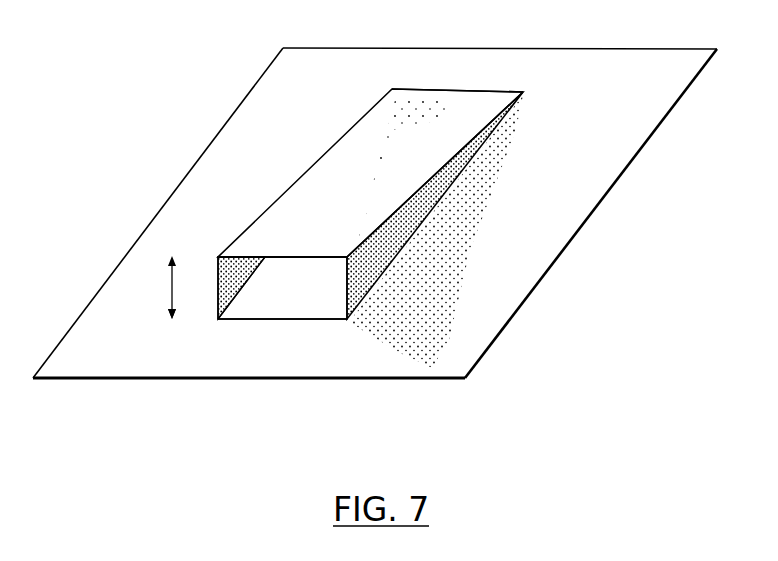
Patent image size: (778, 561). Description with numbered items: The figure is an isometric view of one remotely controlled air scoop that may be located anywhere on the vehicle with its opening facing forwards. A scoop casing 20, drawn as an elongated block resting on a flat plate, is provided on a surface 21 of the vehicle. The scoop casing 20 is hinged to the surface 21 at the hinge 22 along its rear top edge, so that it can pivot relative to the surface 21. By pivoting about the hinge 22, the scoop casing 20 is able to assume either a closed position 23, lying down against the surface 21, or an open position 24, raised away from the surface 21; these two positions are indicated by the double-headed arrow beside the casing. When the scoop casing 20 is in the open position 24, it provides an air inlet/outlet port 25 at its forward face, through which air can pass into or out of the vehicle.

The scoop casing 20 is at (316, 207).
The surface 21 is at (545, 210).
The hinge 22 is at (408, 82).
The closed position 23 is at (172, 318).
The open position 24 is at (172, 257).
The air inlet/outlet port 25 is at (308, 302).